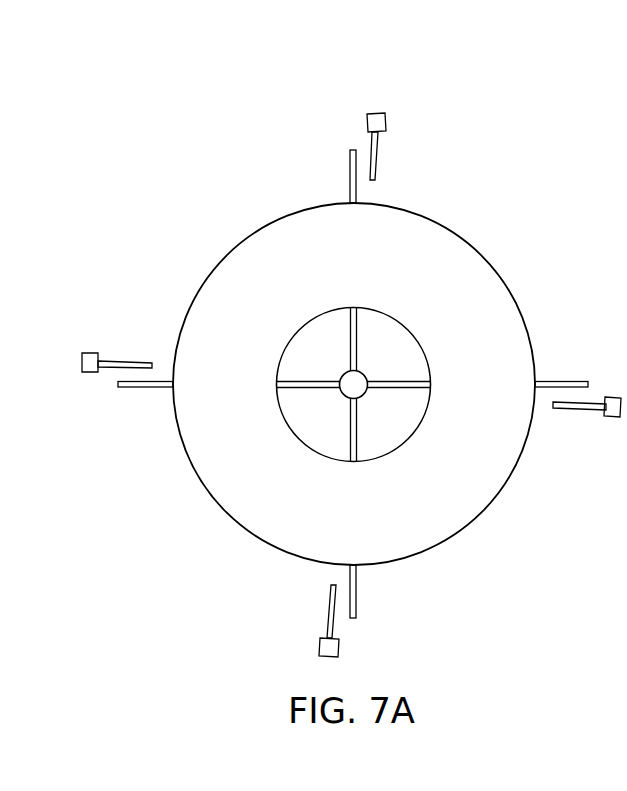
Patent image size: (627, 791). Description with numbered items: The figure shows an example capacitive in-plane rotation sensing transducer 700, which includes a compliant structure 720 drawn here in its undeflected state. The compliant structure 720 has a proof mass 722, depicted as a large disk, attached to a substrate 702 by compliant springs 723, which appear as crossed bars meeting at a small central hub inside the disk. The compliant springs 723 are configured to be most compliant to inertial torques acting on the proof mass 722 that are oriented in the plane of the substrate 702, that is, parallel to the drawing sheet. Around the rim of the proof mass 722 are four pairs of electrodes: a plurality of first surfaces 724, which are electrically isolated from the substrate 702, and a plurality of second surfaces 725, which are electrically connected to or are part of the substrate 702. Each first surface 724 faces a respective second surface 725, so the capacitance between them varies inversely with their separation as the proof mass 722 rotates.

The capacitive in-plane rotation sensing transducer 700 is at (164, 56).
The compliant structure 720 is at (264, 103).
The substrate 702 is at (505, 154).
The proof mass 722 is at (273, 486).
The compliant springs 723 is at (349, 349).
The first surfaces 724 is at (372, 176).
The second surfaces 725 is at (352, 159).